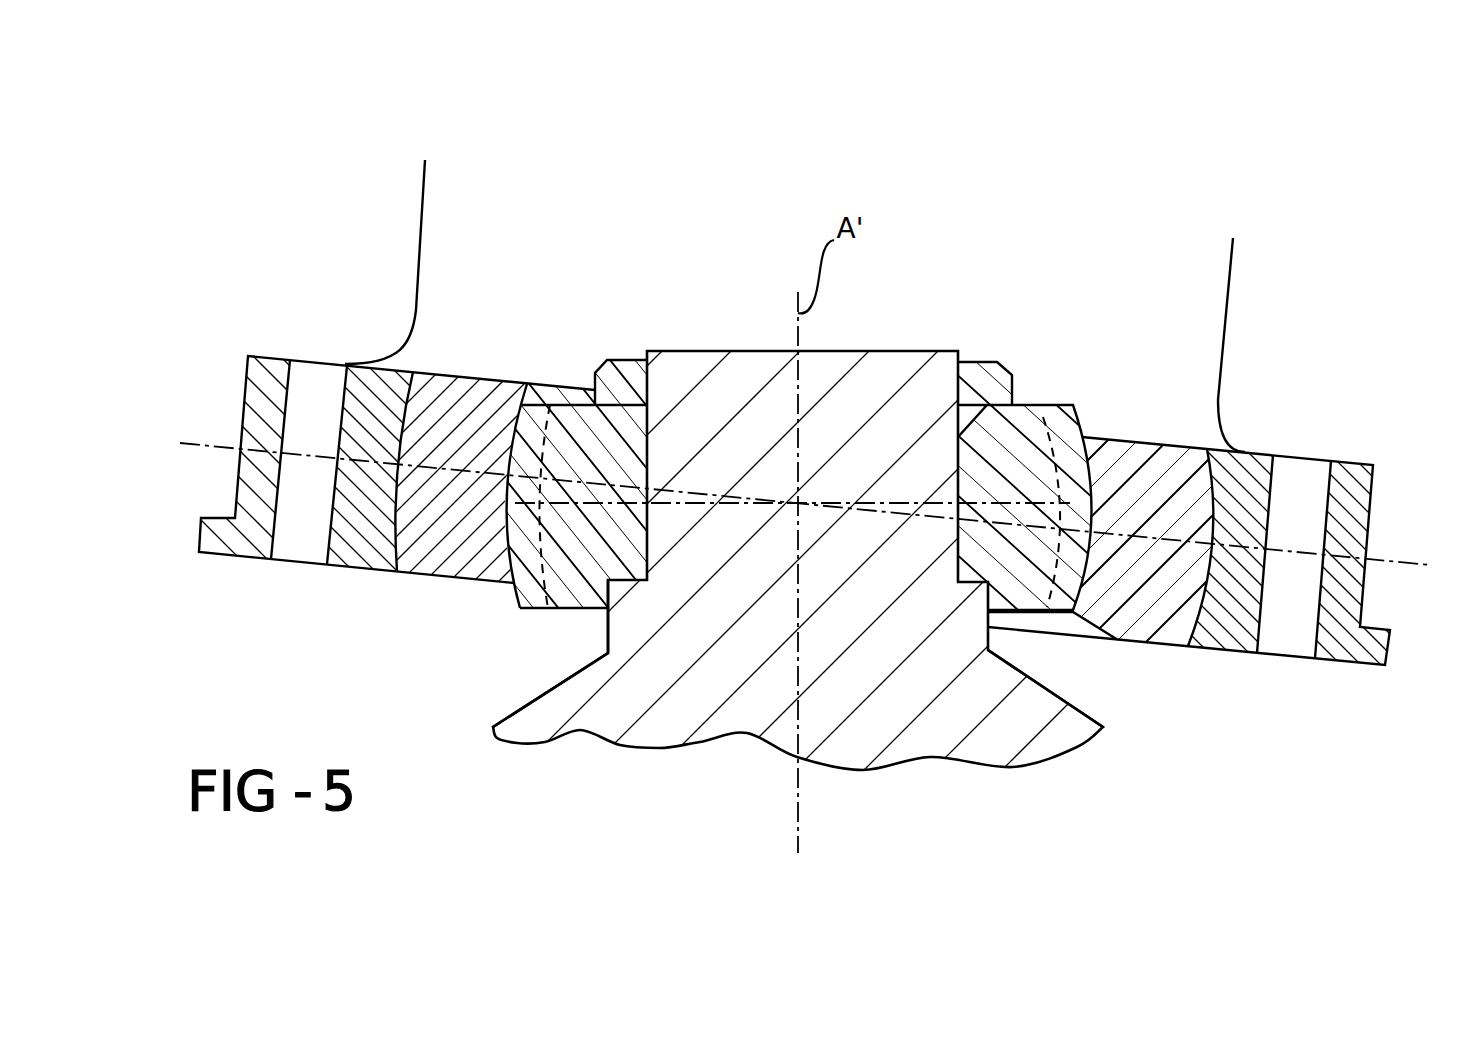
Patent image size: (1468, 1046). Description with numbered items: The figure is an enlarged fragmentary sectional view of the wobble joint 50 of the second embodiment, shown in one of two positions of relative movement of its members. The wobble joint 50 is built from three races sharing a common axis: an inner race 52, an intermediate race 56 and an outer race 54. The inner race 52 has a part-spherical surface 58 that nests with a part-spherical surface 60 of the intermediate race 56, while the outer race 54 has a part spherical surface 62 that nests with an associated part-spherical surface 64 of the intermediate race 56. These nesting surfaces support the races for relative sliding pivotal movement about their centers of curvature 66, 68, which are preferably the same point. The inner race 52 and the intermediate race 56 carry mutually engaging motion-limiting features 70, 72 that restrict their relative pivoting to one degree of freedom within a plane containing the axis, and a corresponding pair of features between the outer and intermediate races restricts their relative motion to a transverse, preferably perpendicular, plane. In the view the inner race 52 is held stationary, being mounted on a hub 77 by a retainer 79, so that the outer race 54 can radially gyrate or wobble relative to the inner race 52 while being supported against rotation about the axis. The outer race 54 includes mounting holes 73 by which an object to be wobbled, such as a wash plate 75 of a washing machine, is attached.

The wobble joint 50 is at (1170, 231).
The inner race 52 is at (1052, 398).
The outer race 54 is at (1377, 490).
The intermediate race 56 is at (1167, 438).
The part-spherical surface 58 is at (1080, 406).
The part-spherical surface 60 is at (568, 390).
The part spherical surface 62 is at (400, 414).
The part-spherical surface 64 is at (387, 537).
The center of curvature 66 is at (683, 504).
The center of curvature 68 is at (600, 478).
The motion-limiting feature 70 is at (532, 611).
The motion-limiting feature 72 is at (543, 397).
The mounting holes 73 is at (312, 369).
The wash plate 75 is at (1228, 303).
The hub 77 is at (940, 743).
The retainer 79 is at (982, 363).